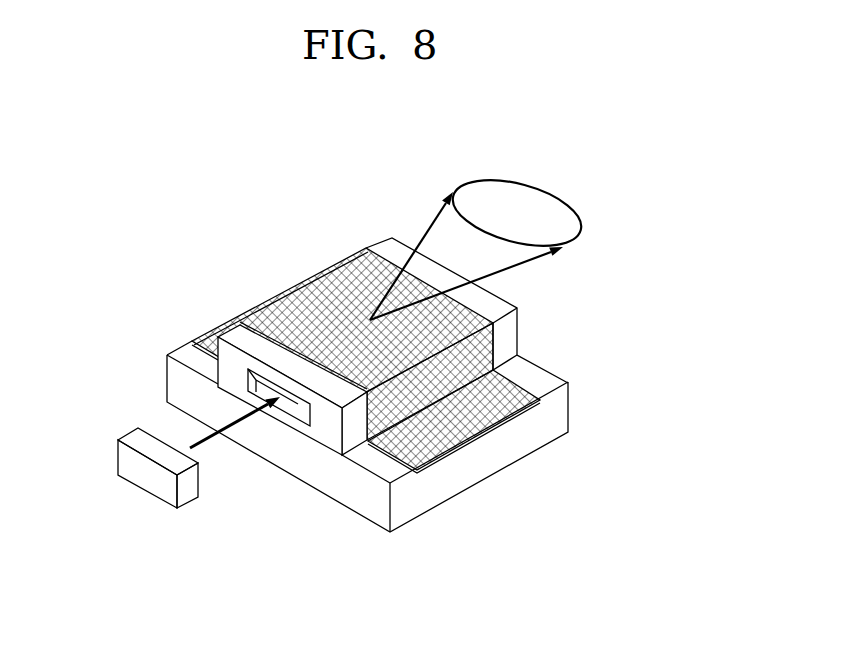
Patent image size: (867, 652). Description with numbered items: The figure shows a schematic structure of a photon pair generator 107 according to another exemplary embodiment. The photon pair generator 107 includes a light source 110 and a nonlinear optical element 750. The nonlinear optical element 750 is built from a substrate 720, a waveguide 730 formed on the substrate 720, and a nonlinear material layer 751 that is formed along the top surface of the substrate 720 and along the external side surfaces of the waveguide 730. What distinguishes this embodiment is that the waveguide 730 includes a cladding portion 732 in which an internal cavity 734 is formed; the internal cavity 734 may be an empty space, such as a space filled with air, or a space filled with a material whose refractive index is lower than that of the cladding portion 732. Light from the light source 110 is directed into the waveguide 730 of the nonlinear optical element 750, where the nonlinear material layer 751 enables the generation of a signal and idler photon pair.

The photon pair generator 107 is at (662, 220).
The light source 110 is at (132, 438).
The substrate 720 is at (185, 351).
The waveguide 730 is at (347, 568).
The cladding portion 732 is at (328, 428).
The internal cavity 734 is at (299, 411).
The nonlinear optical element 750 is at (236, 269).
The nonlinear material layer 751 is at (315, 273).